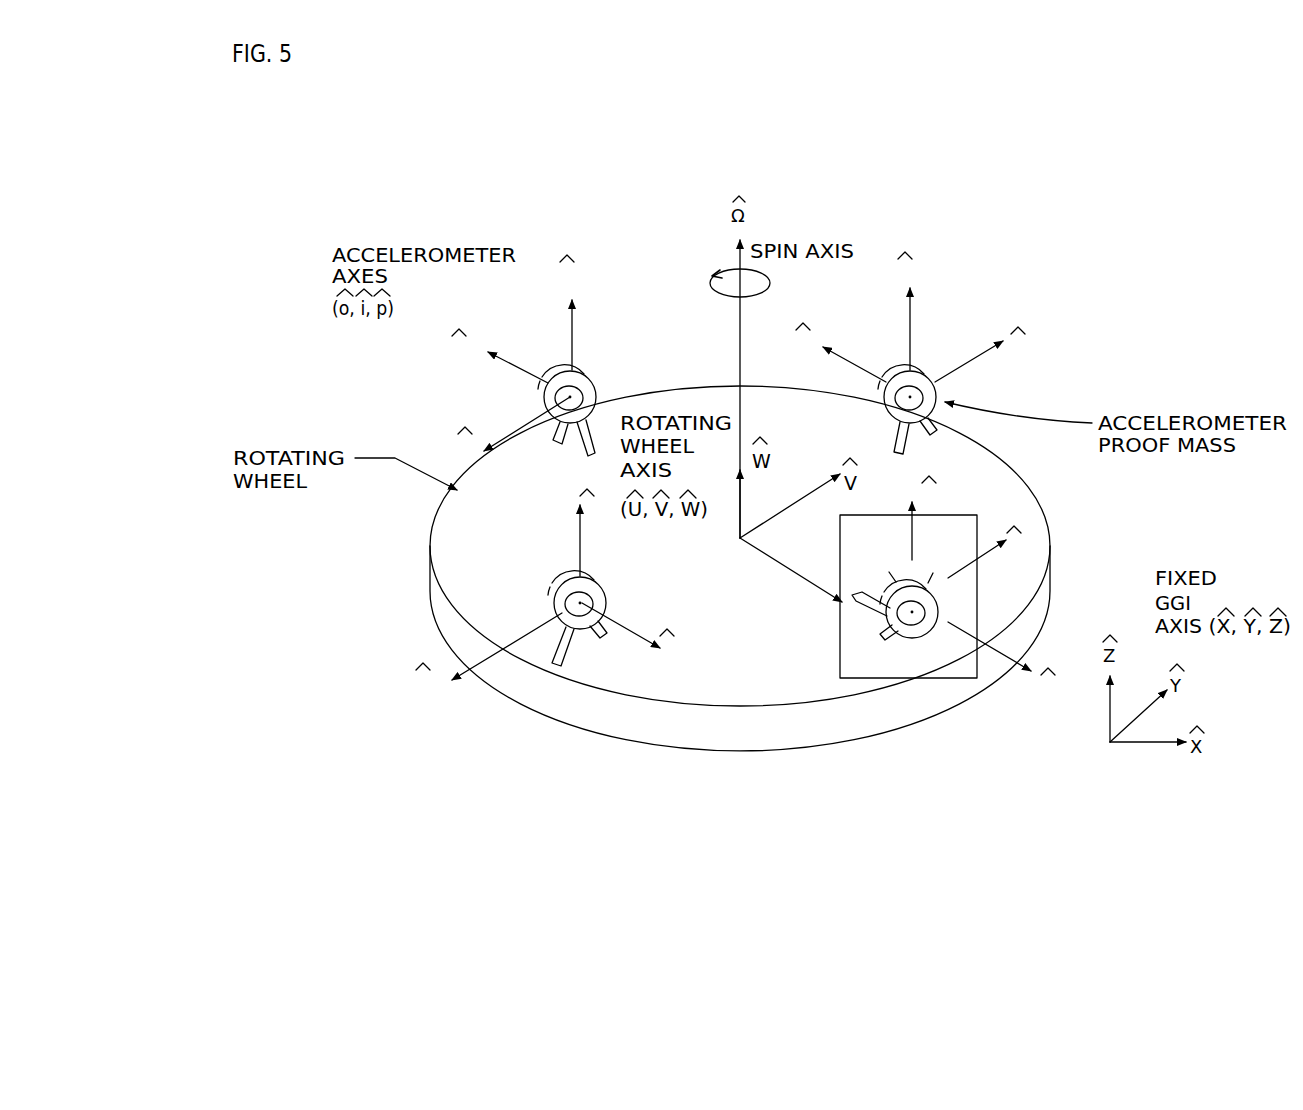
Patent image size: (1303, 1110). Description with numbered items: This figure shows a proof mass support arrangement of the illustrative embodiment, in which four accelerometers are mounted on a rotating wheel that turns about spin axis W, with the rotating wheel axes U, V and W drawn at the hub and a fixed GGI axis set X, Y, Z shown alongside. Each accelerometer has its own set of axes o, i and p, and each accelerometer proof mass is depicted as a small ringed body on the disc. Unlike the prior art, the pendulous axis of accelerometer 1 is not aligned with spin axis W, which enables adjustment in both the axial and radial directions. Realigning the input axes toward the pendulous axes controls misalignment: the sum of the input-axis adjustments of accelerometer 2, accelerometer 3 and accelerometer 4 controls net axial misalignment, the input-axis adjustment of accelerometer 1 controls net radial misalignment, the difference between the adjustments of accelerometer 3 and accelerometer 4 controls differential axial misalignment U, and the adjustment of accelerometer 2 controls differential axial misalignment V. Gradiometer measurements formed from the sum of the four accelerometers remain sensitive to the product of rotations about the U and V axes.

The accelerometer 1 is at (950, 590).
The accelerometer 2 is at (524, 360).
The accelerometer 3 is at (912, 353).
The accelerometer 4 is at (547, 594).